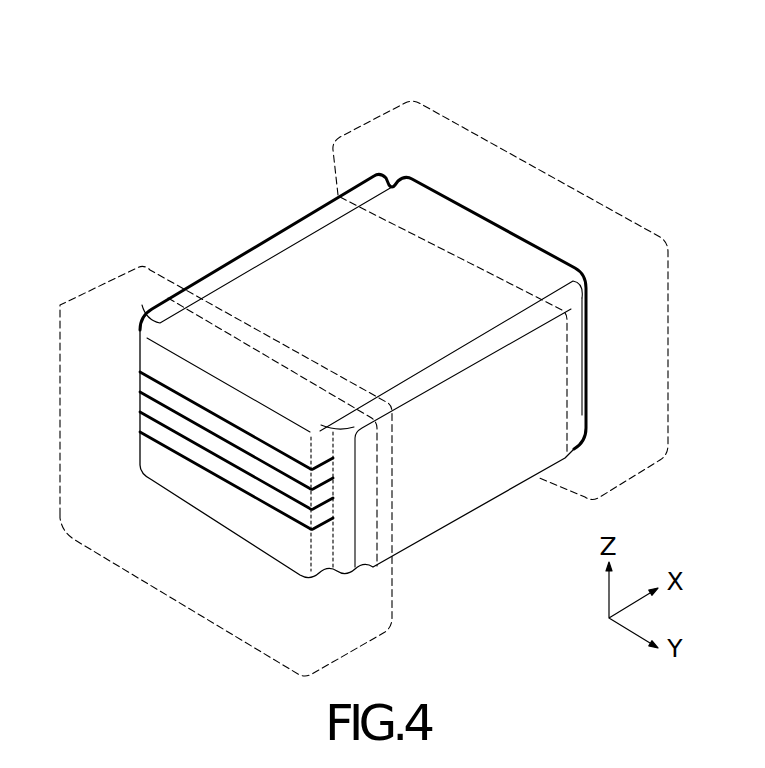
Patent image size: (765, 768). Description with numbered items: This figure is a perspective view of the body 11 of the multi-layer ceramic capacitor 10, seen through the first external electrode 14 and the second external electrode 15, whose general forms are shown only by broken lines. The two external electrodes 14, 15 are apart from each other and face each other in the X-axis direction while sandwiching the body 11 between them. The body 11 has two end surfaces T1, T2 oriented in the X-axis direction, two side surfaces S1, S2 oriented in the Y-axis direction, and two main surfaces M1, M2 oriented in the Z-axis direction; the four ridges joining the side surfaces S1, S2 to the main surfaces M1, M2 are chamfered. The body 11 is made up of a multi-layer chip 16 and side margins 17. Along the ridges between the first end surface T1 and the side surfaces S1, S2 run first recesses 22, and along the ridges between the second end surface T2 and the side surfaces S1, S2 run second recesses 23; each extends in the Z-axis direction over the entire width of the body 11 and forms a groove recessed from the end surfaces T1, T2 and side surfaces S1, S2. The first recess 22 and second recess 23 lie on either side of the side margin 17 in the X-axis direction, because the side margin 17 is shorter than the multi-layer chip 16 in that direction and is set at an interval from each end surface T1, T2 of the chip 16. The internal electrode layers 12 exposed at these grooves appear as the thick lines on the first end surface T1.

The multi-layer ceramic capacitor 10 is at (468, 94).
The body 11 is at (226, 204).
The internal electrodes 12 is at (262, 503).
The first external electrode 14 is at (163, 587).
The second external electrode 15 is at (547, 174).
The multi-layer chip 16 is at (388, 309).
The side margin 17 is at (290, 233).
The first recess 22 is at (122, 396).
The second recess 23 is at (386, 175).
The first end surface T1 is at (167, 476).
The second end surface T2 is at (507, 229).
The side surface S1 is at (492, 500).
The side surface S2 is at (208, 272).
The main surface M1 is at (320, 317).
The main surface M2 is at (435, 537).